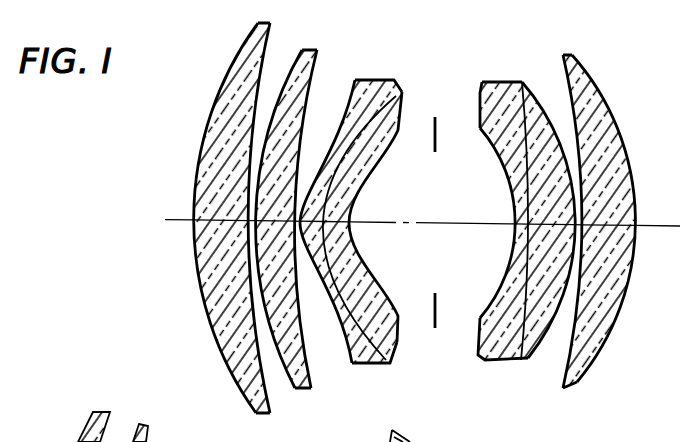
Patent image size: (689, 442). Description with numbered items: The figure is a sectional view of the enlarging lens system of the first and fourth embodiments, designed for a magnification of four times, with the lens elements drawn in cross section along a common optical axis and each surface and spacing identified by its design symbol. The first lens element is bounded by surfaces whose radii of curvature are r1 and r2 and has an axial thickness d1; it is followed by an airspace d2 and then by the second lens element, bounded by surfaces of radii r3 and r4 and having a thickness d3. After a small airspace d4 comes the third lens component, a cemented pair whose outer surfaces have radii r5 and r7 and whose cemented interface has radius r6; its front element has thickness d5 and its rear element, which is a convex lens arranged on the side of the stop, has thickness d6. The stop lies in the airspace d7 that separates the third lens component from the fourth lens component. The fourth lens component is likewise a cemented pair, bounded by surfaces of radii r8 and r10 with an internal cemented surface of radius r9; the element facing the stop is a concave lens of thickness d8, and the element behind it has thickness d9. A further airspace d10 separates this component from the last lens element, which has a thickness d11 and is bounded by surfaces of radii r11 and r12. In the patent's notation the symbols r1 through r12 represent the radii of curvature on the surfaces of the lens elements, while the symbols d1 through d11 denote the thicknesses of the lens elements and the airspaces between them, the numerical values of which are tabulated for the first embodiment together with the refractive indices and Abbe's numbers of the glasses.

The radius of curvature of first surface r1 is at (242, 393).
The radius of curvature of second surface r2 is at (265, 405).
The radius of curvature of third surface r3 is at (293, 392).
The radius of curvature of fourth surface r4 is at (311, 388).
The radius of curvature of fifth surface r5 is at (350, 366).
The radius of curvature of sixth surface r6 is at (386, 364).
The radius of curvature of seventh surface r7 is at (399, 338).
The radius of curvature of eighth surface r8 is at (478, 306).
The radius of curvature of ninth surface r9 is at (515, 356).
The radius of curvature of tenth surface r10 is at (543, 348).
The radius of curvature of eleventh surface r11 is at (560, 385).
The radius of curvature of twelfth surface r12 is at (586, 373).
The thickness of first lens element d1 is at (216, 220).
The airspace between first and second lens elements d2 is at (251, 220).
The thickness of second lens element d3 is at (277, 221).
The airspace between second lens element and third lens component d4 is at (298, 221).
The thickness of front element of third lens component d5 is at (312, 221).
The thickness of convex lens of third lens component d6 is at (336, 221).
The airspace between third and fourth lens components d7 is at (434, 204).
The thickness of concave lens of fourth lens component d8 is at (520, 223).
The thickness of rear element of fourth lens component d9 is at (549, 223).
The airspace between fourth lens component and last lens element d10 is at (579, 224).
The thickness of last lens element d11 is at (599, 224).